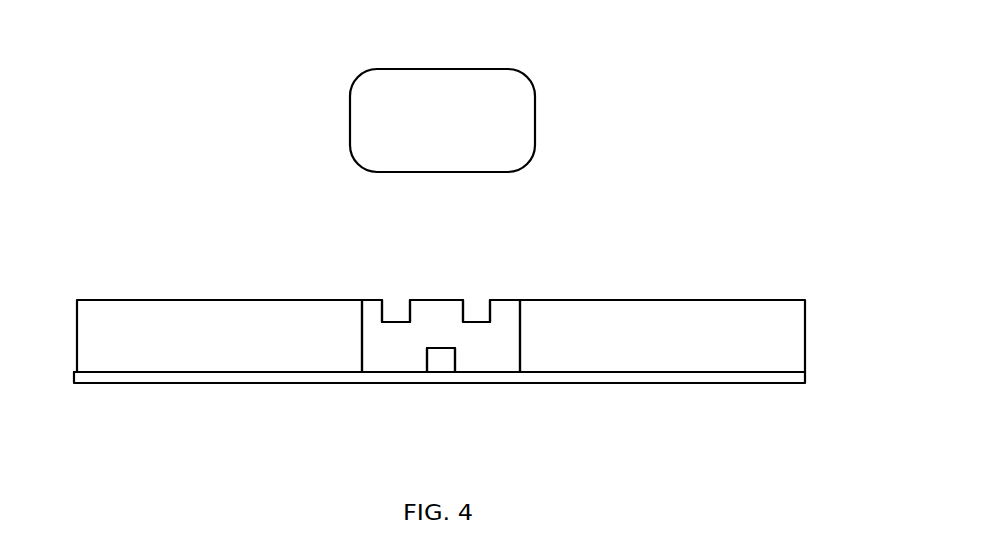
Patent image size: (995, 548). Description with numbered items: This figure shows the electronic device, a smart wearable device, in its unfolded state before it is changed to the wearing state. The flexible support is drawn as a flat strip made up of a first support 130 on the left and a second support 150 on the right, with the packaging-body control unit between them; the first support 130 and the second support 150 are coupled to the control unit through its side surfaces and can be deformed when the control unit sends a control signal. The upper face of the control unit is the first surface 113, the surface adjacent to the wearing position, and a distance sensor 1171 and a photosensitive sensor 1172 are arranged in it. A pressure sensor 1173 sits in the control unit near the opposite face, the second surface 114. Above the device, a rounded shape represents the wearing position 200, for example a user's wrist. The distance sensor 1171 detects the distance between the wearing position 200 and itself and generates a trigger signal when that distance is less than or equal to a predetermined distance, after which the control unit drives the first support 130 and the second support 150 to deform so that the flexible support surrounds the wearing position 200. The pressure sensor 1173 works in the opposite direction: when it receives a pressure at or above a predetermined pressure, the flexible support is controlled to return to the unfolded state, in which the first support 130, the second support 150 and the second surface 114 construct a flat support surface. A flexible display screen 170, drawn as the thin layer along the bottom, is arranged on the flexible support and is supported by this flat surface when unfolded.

The wearing position 200 is at (508, 98).
The first support 130 is at (188, 313).
The second support 150 is at (610, 315).
The first surface 113 is at (367, 300).
The distance sensor 1171 is at (398, 310).
The photosensitive sensor 1172 is at (478, 308).
The pressure sensor 1173 is at (438, 365).
The flexible display screen 170 is at (627, 375).
The second surface 114 is at (378, 372).